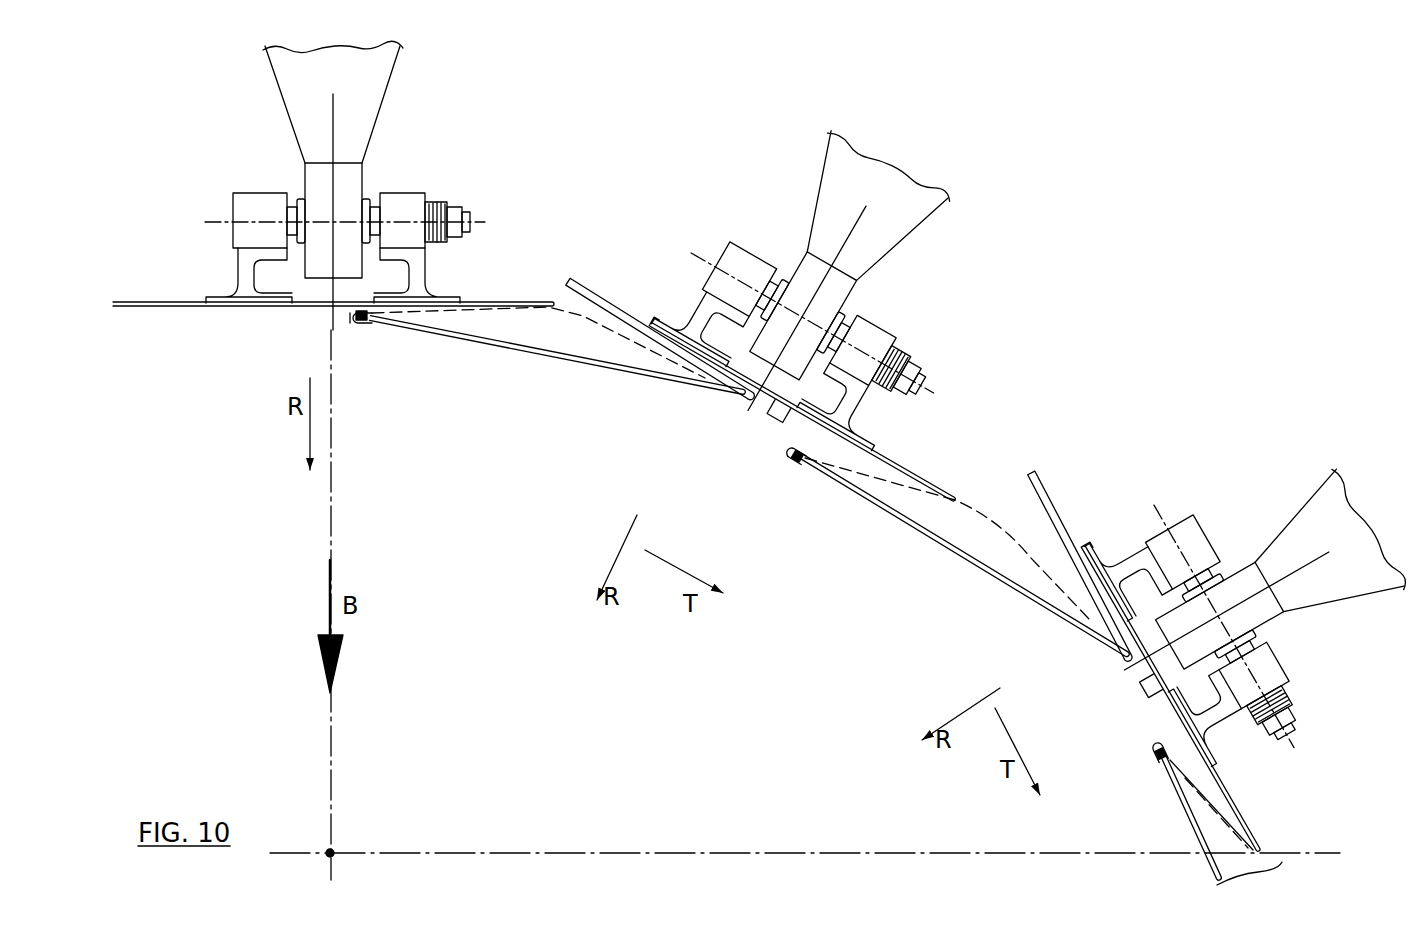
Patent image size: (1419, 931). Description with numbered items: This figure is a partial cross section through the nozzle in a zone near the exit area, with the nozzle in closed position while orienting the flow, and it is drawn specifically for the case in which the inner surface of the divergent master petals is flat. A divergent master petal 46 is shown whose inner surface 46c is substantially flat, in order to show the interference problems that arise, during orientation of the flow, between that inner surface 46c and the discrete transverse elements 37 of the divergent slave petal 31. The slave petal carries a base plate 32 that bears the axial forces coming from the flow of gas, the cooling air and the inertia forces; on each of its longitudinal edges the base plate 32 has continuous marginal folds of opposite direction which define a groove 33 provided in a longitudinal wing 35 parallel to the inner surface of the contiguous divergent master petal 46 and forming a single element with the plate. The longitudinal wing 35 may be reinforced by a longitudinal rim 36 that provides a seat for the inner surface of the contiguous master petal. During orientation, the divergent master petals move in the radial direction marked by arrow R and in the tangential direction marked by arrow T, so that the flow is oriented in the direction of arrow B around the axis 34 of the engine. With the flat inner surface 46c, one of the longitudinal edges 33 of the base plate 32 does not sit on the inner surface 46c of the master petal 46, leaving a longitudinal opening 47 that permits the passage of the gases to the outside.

The divergent slave petal 31 is at (612, 393).
The base plate 32 is at (567, 287).
The groove 33 is at (360, 330).
The axis of the engine 34 is at (330, 853).
The longitudinal wing 35 is at (353, 317).
The rim 36 is at (363, 314).
The discrete transverse elements 37 is at (520, 334).
The divergent master petal 46 is at (385, 170).
The inner surface 46c is at (192, 308).
The longitudinal opening 47 is at (778, 417).